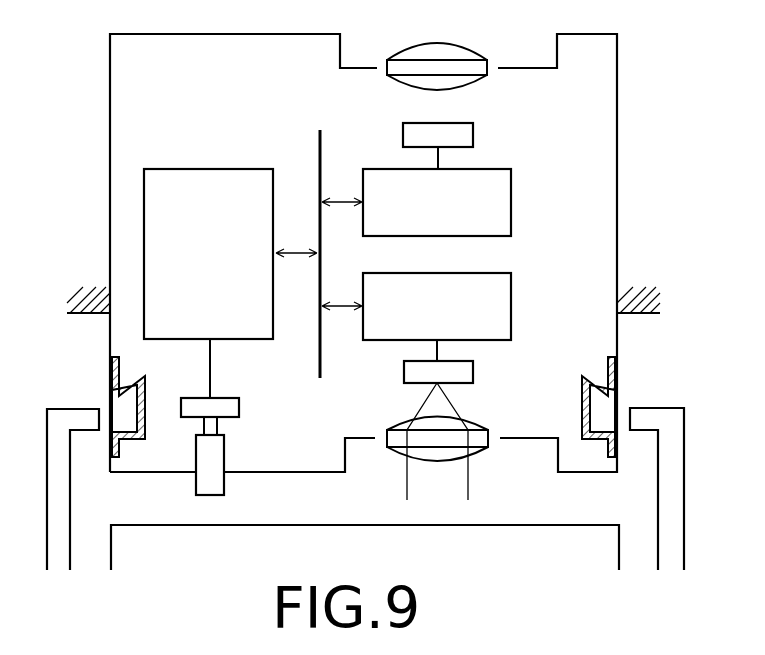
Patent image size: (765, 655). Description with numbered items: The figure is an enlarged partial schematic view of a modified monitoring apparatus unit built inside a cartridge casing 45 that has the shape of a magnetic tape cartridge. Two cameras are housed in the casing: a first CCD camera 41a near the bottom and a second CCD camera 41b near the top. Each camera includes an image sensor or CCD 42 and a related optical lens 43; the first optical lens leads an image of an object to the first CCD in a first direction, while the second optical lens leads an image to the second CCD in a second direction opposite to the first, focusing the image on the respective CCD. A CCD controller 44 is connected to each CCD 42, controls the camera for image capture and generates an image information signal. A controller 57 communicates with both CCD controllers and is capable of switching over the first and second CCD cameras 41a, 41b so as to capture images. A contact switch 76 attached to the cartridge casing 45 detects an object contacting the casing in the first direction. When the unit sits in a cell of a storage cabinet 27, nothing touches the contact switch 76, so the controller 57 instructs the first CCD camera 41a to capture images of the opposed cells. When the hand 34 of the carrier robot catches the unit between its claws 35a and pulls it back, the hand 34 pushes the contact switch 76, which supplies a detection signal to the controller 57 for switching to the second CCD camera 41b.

The cartridge casing 45 is at (295, 34).
The optical lens 43 is at (487, 60).
The CCD 42 is at (403, 137).
The first CCD camera 41a is at (512, 382).
The second CCD camera 41b is at (508, 141).
The CCD controller 44 is at (511, 208).
The controller 57 is at (235, 169).
The contact switch 76 is at (226, 462).
The storage cabinet 27 is at (645, 314).
The claws 35a is at (83, 411).
The hand 34 is at (619, 550).